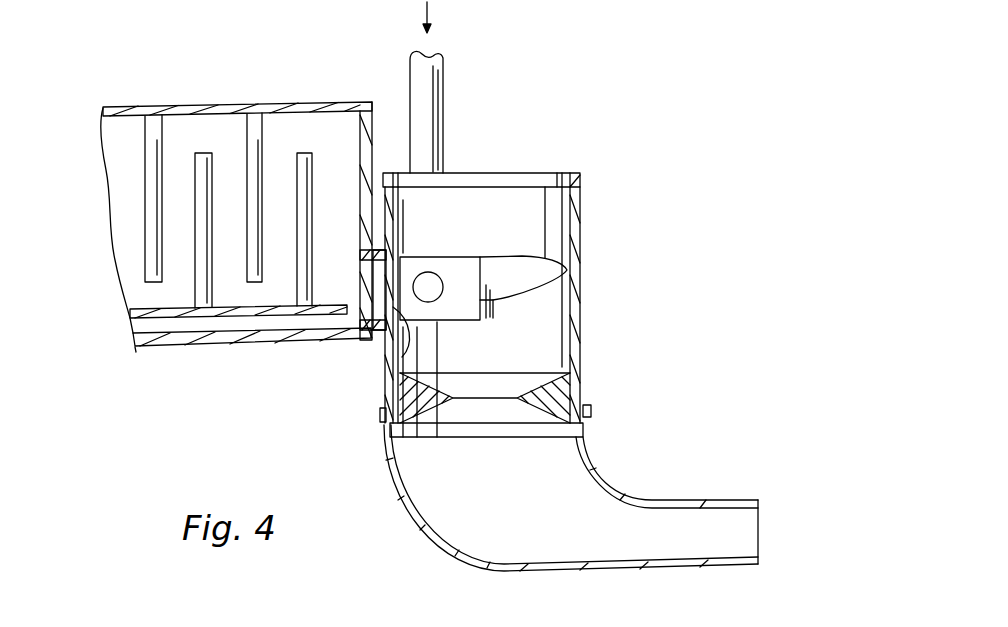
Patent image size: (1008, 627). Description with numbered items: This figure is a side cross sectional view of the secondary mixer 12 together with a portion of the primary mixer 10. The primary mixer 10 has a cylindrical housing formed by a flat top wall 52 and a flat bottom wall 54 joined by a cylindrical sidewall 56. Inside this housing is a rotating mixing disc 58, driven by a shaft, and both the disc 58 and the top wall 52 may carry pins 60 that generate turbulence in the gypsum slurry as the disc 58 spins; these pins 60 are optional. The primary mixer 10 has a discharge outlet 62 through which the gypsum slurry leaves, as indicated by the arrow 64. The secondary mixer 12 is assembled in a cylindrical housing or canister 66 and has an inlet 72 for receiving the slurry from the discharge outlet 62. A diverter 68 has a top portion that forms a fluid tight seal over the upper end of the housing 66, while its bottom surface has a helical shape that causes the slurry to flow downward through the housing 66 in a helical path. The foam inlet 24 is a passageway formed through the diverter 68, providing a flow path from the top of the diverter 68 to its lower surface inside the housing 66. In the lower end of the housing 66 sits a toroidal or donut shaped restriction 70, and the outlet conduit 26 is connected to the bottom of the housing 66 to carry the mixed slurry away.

The primary mixer 10 is at (203, 100).
The secondary mixer 12 is at (594, 178).
The foam inlet 24 is at (443, 86).
The outlet conduit 26 is at (712, 502).
The top wall 52 is at (328, 102).
The bottom wall 54 is at (257, 347).
The sidewall 56 is at (373, 128).
The mixing disc 58 is at (153, 310).
The pins 60 is at (258, 158).
The discharge outlet 62 is at (367, 307).
The arrow 64 is at (392, 289).
The housing 66 is at (580, 292).
The diverter 68 is at (518, 173).
The restriction 70 is at (540, 382).
The inlet 72 is at (395, 362).